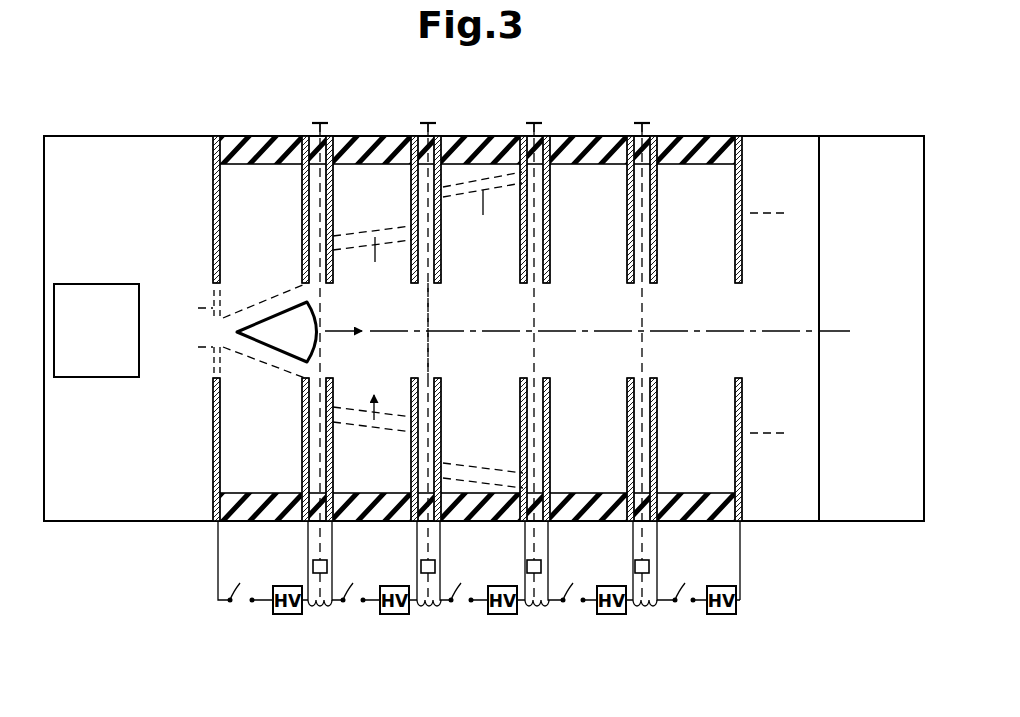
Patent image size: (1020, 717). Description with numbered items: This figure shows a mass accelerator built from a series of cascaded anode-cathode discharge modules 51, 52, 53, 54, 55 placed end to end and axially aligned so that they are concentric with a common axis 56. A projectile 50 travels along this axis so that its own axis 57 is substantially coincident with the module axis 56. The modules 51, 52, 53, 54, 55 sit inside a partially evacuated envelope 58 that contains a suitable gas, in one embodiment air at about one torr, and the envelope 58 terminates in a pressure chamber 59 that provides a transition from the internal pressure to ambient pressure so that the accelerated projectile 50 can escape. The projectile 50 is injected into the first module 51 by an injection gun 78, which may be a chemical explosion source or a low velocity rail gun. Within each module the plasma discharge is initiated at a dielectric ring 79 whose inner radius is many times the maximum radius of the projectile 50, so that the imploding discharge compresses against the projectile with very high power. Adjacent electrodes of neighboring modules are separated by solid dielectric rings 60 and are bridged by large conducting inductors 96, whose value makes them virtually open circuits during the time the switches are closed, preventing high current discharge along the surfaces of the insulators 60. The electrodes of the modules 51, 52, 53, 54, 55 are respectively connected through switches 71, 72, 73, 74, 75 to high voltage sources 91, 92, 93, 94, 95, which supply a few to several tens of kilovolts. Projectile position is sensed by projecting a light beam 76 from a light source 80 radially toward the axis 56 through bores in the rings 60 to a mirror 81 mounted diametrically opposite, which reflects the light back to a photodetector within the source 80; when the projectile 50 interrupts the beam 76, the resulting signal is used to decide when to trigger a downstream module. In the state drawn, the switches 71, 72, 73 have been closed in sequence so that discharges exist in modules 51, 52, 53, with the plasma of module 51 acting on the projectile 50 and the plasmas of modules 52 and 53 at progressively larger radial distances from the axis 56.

The projectile 50 is at (317, 318).
The first discharge module 51 is at (246, 135).
The second discharge module 52 is at (370, 135).
The third discharge module 53 is at (474, 135).
The fourth discharge module 54 is at (590, 135).
The fifth discharge module 55 is at (704, 135).
The axis 56 is at (710, 331).
The projectile axis 57 is at (337, 334).
The envelope 58 is at (142, 118).
The pressure chamber 59 is at (847, 194).
The solid dielectric rings 60 is at (306, 135).
The switch 71 is at (240, 589).
The switch 72 is at (353, 589).
The switch 73 is at (461, 589).
The switch 74 is at (576, 589).
The switch 75 is at (690, 589).
The light beam 76 is at (444, 330).
The injection gun 78 is at (110, 284).
The dielectric rings 79 is at (272, 165).
The light source 80 is at (313, 567).
The mirror 81 is at (322, 121).
The high voltage source 91 is at (284, 615).
The high voltage source 92 is at (394, 615).
The high voltage source 93 is at (505, 615).
The high voltage source 94 is at (613, 615).
The high voltage source 95 is at (722, 615).
The conducting inductors 96 is at (320, 613).